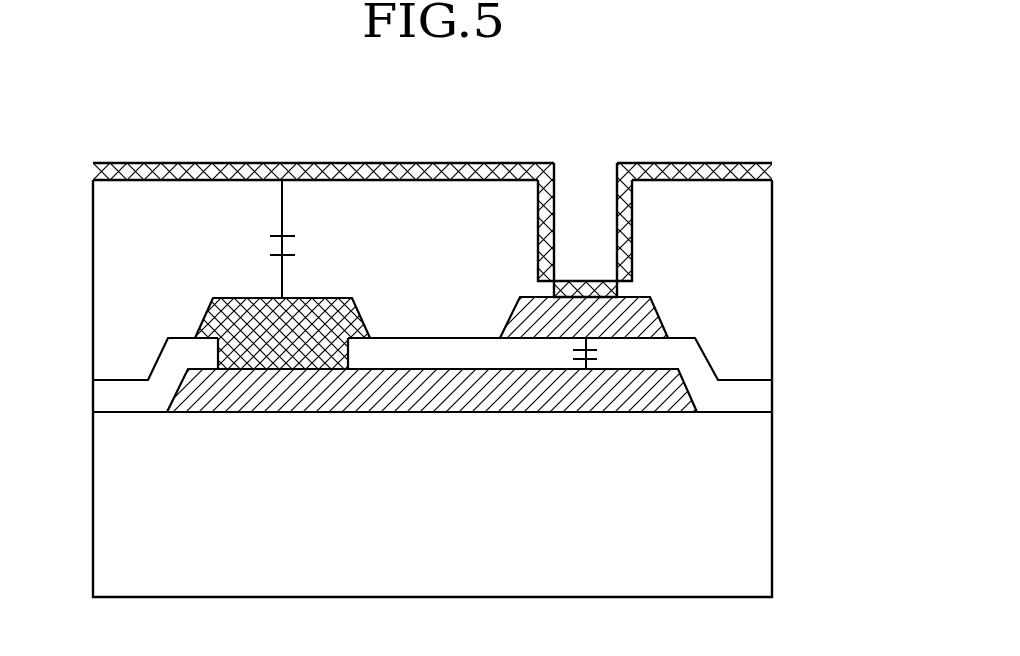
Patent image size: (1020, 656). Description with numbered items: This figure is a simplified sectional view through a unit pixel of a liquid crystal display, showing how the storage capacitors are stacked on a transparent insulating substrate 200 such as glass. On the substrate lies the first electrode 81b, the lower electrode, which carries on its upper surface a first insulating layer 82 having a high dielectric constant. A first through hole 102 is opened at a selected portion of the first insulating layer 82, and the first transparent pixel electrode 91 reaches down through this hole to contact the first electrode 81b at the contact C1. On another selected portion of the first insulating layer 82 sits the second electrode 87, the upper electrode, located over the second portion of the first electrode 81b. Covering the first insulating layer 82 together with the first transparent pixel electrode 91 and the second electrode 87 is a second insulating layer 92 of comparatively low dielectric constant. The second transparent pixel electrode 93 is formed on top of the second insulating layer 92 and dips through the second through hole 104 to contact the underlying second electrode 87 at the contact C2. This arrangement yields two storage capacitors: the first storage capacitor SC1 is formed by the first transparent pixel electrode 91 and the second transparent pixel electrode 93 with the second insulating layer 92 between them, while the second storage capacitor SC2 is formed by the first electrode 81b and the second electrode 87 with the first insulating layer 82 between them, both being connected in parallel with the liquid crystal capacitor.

The transparent insulating substrate 200 is at (757, 545).
The first electrode 81b is at (680, 398).
The first insulating layer 82 is at (757, 397).
The first through hole 102 is at (223, 355).
The first transparent pixel electrode 91 is at (333, 300).
The second electrode 87 is at (647, 332).
The second insulating layer 92 is at (180, 198).
The second transparent pixel electrode 93 is at (767, 169).
The second through hole 104 is at (632, 237).
The first storage capacitor SC1 is at (248, 239).
The second storage capacitor SC2 is at (619, 356).
The contact C1 is at (320, 355).
The contact C2 is at (563, 297).